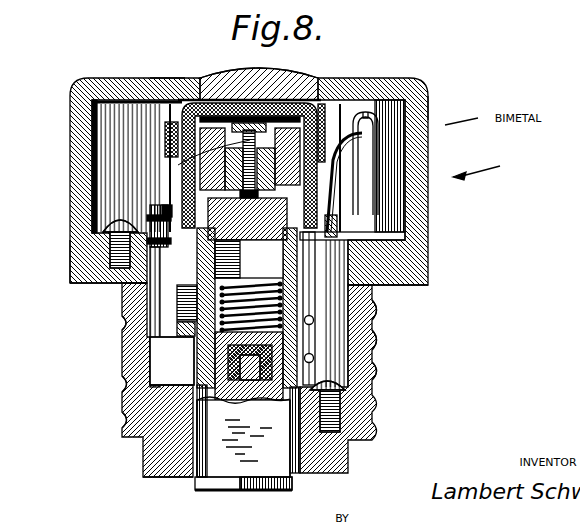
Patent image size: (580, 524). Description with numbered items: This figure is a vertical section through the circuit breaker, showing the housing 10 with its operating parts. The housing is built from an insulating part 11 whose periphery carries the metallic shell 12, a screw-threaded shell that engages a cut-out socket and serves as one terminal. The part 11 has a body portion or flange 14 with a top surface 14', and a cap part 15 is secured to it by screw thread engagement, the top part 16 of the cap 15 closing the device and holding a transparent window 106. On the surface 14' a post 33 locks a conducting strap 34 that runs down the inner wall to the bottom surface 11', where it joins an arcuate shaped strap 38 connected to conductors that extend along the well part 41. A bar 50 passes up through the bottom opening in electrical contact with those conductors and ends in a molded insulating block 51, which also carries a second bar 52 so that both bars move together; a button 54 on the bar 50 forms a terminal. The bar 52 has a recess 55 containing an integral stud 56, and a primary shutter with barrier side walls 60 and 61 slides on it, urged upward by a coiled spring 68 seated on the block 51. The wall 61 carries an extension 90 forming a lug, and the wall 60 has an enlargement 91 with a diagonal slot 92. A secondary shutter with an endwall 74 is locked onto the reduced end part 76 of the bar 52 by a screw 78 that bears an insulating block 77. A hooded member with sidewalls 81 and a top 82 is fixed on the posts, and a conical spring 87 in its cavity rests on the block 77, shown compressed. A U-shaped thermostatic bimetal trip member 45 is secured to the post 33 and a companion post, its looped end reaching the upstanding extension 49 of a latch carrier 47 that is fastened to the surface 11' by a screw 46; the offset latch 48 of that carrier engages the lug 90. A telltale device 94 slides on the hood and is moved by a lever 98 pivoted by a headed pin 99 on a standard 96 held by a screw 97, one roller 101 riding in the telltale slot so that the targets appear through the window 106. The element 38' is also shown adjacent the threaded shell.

The housing 10 is at (487, 166).
The part 11 is at (105, 426).
The surface 11' is at (165, 458).
The metallic shell 12 is at (374, 404).
The body portion 14 is at (92, 296).
The top surface 14' is at (393, 227).
The cap part 15 is at (430, 102).
The top part 16 is at (386, 78).
The post 33 is at (406, 160).
The conducting strap 34 is at (340, 228).
The arcuate shaped strap 38 is at (103, 384).
The thread 38' is at (400, 371).
The well part 41 is at (206, 441).
The thermostatic bimetal trip member 45 is at (360, 138).
The screw 46 is at (374, 431).
The latch carrier 47 is at (374, 321).
The offset latch 48 is at (428, 263).
The upstanding extension 49 is at (336, 222).
The bar 50 is at (216, 481).
The molded block 51 is at (194, 362).
The second bar 52 is at (374, 342).
The button 54 is at (241, 491).
The recess 55 is at (205, 256).
The stud 56 is at (194, 346).
The barrier side wall 60 is at (283, 242).
The barrier side wall 61 is at (283, 272).
The coiled spring 68 is at (186, 306).
The endwall 74 is at (178, 170).
The reduced end part 76 is at (316, 136).
The insulating block 77 is at (157, 127).
The screw 78 is at (163, 208).
The sidewall 81 is at (168, 157).
The top 82 is at (204, 120).
The conical spring 87 is at (324, 102).
The extension 90 is at (373, 298).
The enlargement 91 is at (123, 339).
The diagonal slot 92 is at (147, 300).
The telltale device 94 is at (290, 99).
The standard 96 is at (150, 219).
The screw 97 is at (103, 226).
The lever 98 is at (165, 146).
The headed pin 99 is at (70, 263).
The roller 101 is at (168, 78).
The transparent window 106 is at (262, 77).